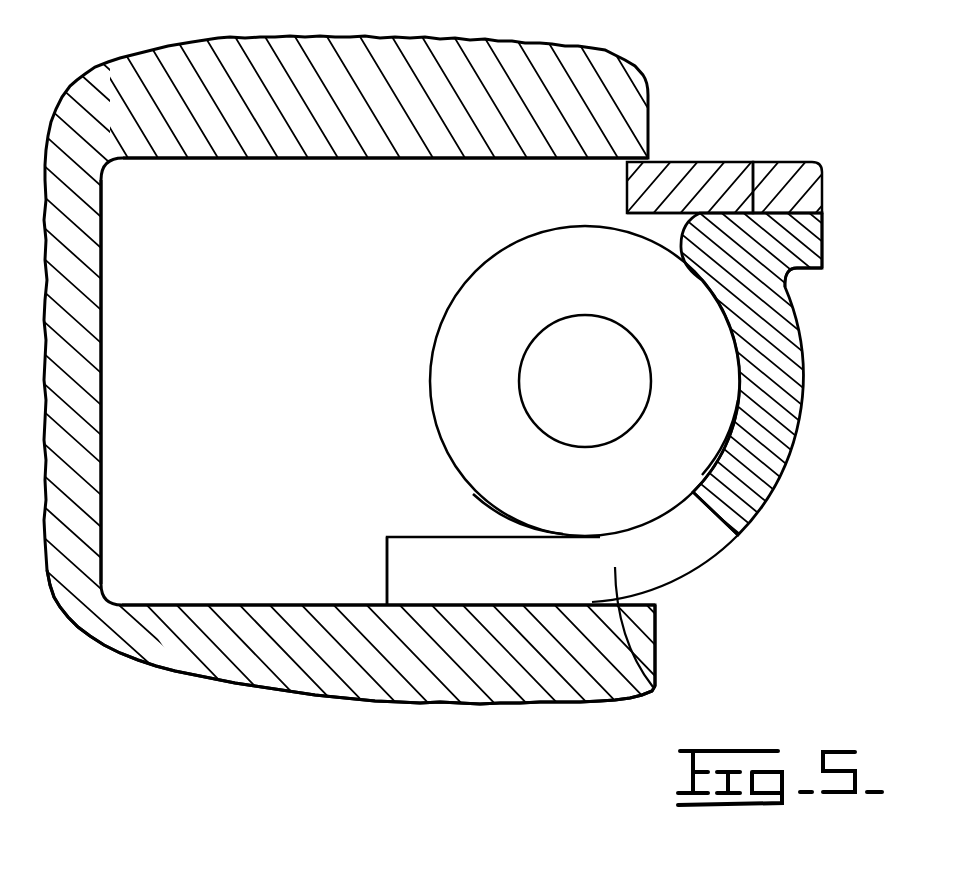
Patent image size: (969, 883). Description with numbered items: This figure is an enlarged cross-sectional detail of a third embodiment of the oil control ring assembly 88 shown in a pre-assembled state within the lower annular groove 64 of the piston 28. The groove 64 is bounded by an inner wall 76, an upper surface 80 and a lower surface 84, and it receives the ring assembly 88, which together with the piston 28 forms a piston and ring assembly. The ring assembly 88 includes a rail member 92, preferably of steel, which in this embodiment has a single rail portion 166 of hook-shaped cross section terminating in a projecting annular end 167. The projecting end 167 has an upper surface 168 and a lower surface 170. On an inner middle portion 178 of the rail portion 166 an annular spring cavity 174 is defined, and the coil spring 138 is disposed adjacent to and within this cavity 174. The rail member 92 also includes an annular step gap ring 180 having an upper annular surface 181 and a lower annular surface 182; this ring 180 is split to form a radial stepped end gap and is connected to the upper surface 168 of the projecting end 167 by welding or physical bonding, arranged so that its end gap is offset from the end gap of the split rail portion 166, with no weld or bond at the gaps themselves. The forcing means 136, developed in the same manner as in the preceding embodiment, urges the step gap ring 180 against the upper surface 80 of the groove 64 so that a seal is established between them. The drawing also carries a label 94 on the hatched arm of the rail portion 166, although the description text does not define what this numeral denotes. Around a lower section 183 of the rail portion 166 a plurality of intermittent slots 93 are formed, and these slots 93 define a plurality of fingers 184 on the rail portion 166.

The piston 28 is at (596, 62).
The lower annular groove 64 is at (222, 158).
The upper surface 80 is at (360, 158).
The inner wall 76 is at (103, 413).
The lower surface 84 is at (170, 604).
The oil control ring assembly 88 is at (357, 577).
The lower section 183 is at (655, 690).
The upper annular surface 181 is at (688, 163).
The step gap ring 180 is at (772, 163).
The lower annular surface 182 is at (657, 217).
The arcuate arm 94 is at (802, 431).
The upper surface 168 is at (807, 206).
The projecting annular end 167 is at (823, 237).
The rail portion 166 is at (713, 547).
The rail member 92 is at (690, 558).
The intermittent slots 93 is at (665, 565).
The coil spring 138 is at (460, 397).
The forcing means 136 is at (738, 375).
The inner middle portion 178 is at (723, 432).
The annular spring cavity 174 is at (515, 528).
The lower surface 170 is at (535, 603).
The fingers 184 is at (403, 563).